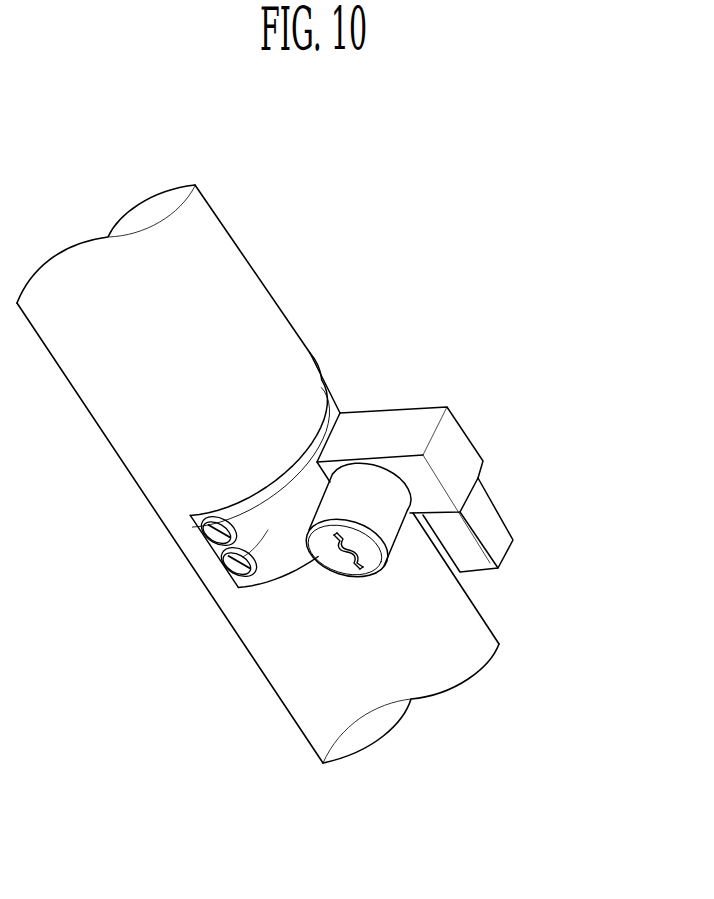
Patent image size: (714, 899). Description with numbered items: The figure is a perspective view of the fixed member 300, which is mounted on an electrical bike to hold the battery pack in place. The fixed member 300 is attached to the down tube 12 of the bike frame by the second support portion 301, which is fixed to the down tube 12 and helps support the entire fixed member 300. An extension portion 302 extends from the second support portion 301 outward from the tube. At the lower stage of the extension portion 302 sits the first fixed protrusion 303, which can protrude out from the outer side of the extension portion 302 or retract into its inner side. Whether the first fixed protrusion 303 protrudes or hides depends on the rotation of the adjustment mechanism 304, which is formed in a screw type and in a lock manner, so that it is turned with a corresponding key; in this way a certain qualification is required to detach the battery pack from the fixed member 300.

The down tube 12 is at (252, 302).
The fixed member 300 is at (502, 404).
The second support portion 301 is at (227, 570).
The extension portion 302 is at (398, 423).
The first fixed protrusion 303 is at (500, 528).
The adjustment mechanism 304 is at (390, 498).